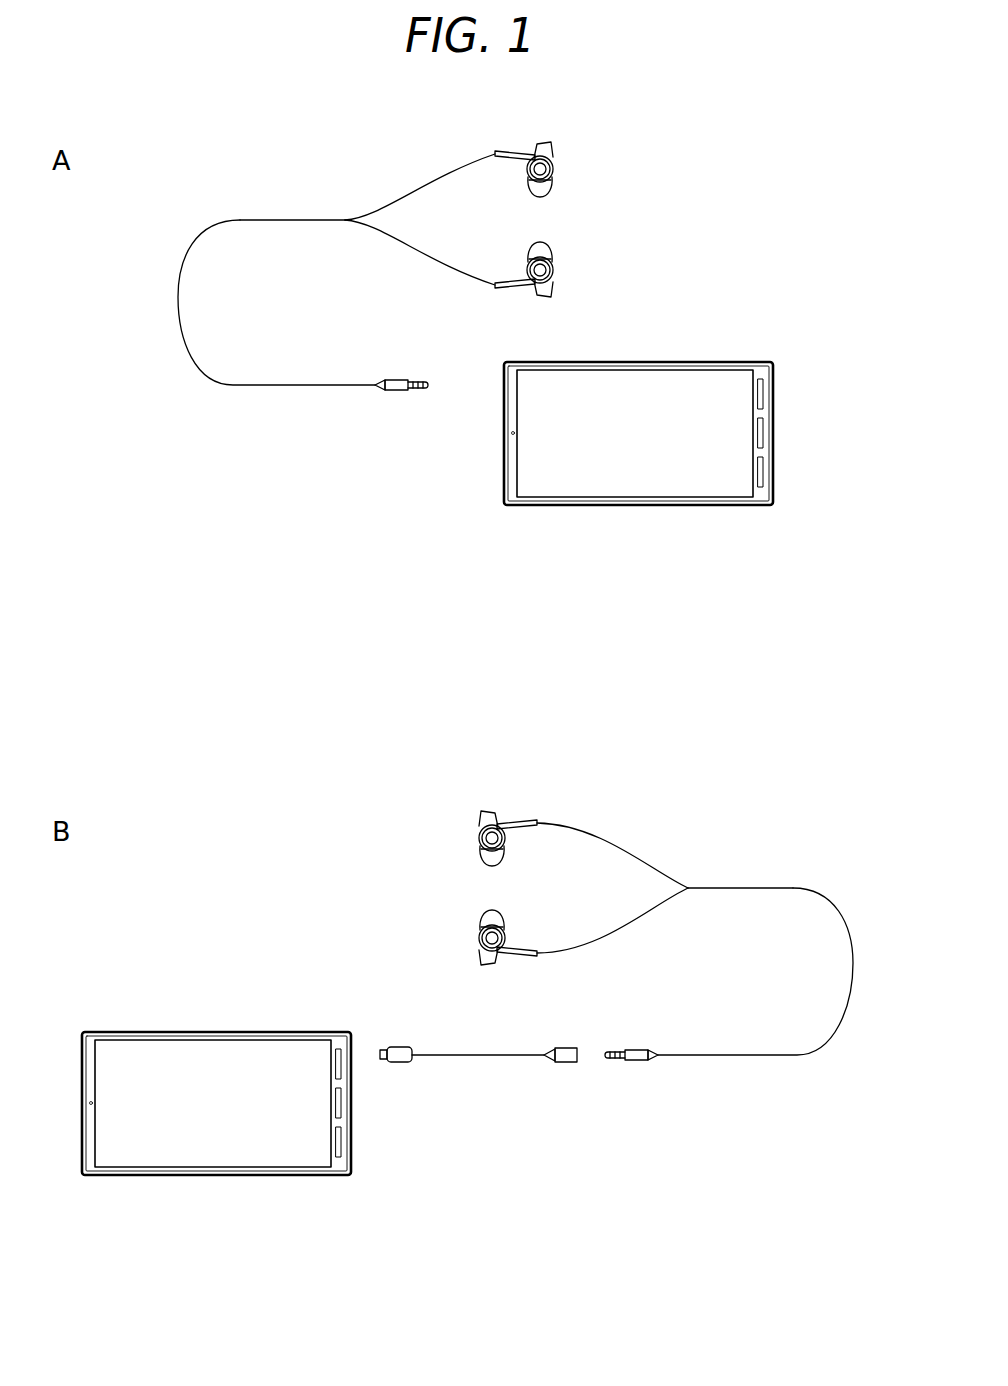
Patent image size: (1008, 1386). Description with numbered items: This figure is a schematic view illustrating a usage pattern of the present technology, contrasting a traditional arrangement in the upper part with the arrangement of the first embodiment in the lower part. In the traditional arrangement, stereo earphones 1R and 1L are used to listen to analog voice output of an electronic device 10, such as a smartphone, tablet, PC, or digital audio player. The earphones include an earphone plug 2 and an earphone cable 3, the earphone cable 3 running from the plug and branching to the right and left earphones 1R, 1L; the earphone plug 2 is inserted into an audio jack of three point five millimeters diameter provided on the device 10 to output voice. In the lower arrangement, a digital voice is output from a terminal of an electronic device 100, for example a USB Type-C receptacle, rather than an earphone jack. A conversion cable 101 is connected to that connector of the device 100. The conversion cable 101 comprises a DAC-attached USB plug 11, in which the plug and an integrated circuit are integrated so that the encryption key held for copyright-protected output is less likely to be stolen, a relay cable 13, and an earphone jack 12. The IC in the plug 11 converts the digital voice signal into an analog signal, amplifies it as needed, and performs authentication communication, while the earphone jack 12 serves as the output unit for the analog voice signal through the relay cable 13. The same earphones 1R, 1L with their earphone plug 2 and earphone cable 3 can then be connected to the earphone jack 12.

The right stereo earphone 1R is at (554, 169).
The left stereo earphone 1L is at (554, 270).
The earphone plug 2 is at (396, 392).
The earphone cable 3 is at (187, 347).
The electronic device 10 is at (639, 507).
The electronic device 100 is at (215, 1175).
The conversion cable 101 is at (478, 1054).
The DAC-attached USB plug 11 is at (397, 1064).
The earphone jack 12 is at (563, 1064).
The relay cable 13 is at (478, 1057).